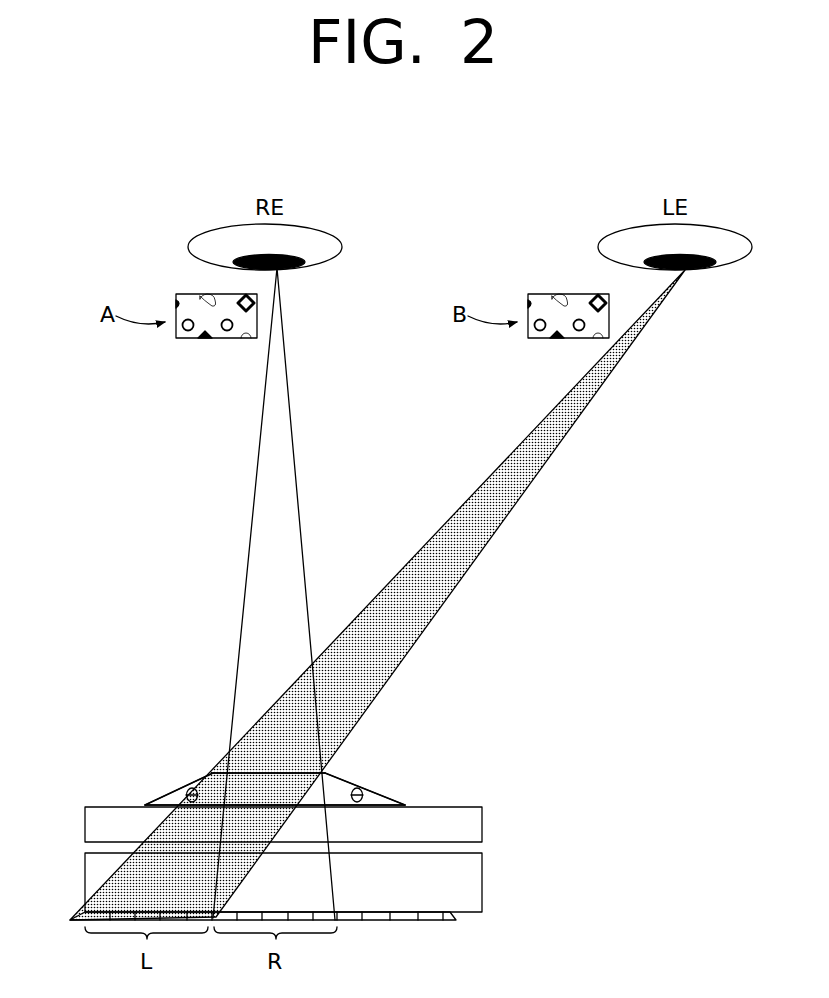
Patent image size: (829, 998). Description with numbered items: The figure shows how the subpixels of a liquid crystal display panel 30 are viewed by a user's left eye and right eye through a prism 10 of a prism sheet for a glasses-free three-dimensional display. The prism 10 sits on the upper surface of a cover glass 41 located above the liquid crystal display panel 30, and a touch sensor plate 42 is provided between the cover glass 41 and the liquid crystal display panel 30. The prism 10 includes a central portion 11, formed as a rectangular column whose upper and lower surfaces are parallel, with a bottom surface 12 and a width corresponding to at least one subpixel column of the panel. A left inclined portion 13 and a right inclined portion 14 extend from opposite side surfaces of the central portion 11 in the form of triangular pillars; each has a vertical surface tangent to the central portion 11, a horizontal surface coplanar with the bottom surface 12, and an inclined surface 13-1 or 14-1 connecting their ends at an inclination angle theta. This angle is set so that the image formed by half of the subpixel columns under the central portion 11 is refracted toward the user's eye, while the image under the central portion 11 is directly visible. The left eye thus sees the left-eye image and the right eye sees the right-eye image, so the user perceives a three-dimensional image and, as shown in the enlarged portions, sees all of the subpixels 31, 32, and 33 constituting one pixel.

The prism 10 is at (397, 777).
The central portion 11 is at (277, 772).
The bottom surface 12 is at (318, 808).
The left inclined portion 13 is at (203, 790).
The inclined surface 13-1 is at (172, 803).
The right inclined portion 14 is at (397, 797).
The inclined surface 14-1 is at (379, 802).
The liquid crystal display panel 30 is at (445, 918).
The subpixel 31 is at (226, 331).
The subpixel 32 is at (254, 303).
The subpixel 33 is at (200, 297).
The cover glass 41 is at (482, 822).
The touch sensor plate 42 is at (482, 885).